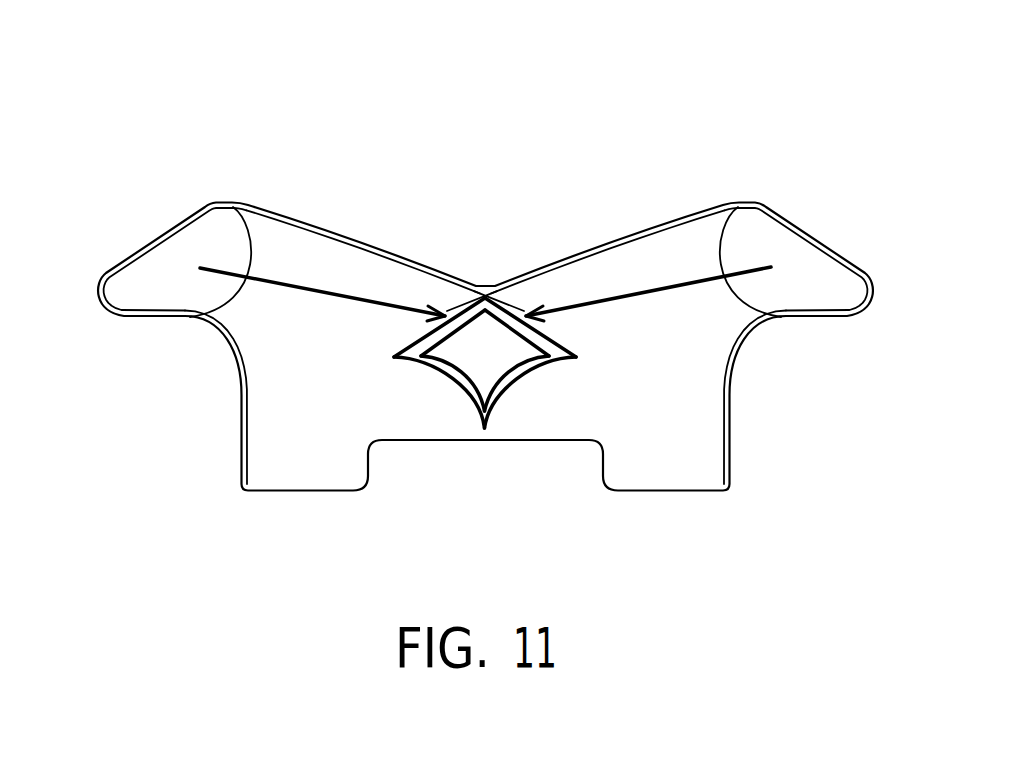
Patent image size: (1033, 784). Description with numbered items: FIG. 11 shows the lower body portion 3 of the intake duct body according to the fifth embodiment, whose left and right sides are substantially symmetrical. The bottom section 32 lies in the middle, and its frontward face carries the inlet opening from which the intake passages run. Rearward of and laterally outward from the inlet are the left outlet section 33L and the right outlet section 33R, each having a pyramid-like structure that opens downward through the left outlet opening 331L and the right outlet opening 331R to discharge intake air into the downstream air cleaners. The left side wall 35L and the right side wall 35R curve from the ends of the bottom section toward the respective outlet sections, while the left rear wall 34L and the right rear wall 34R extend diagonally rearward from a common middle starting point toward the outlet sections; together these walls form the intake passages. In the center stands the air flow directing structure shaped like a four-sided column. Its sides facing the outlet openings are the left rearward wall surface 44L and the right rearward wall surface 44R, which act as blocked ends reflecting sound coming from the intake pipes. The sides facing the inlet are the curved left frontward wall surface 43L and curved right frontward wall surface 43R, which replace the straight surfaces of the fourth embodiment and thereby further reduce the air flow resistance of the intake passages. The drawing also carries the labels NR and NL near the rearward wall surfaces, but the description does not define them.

The lower body portion 3 is at (103, 157).
The bottom section 32 is at (582, 292).
The right outlet section 33R is at (97, 278).
The left outlet section 33L is at (873, 278).
The right outlet opening 331R is at (160, 283).
The left outlet opening 331L is at (810, 283).
The right rear wall 34R is at (328, 233).
The left rear wall 34L is at (647, 232).
The right side wall 35R is at (242, 443).
The left side wall 35L is at (730, 437).
The curved right frontward wall surface 43R is at (452, 378).
The curved left frontward wall surface 43L is at (518, 378).
The right rearward wall surface 44R is at (450, 311).
The left rearward wall surface 44L is at (512, 309).
The right force direction NR is at (322, 285).
The left force direction NL is at (648, 284).